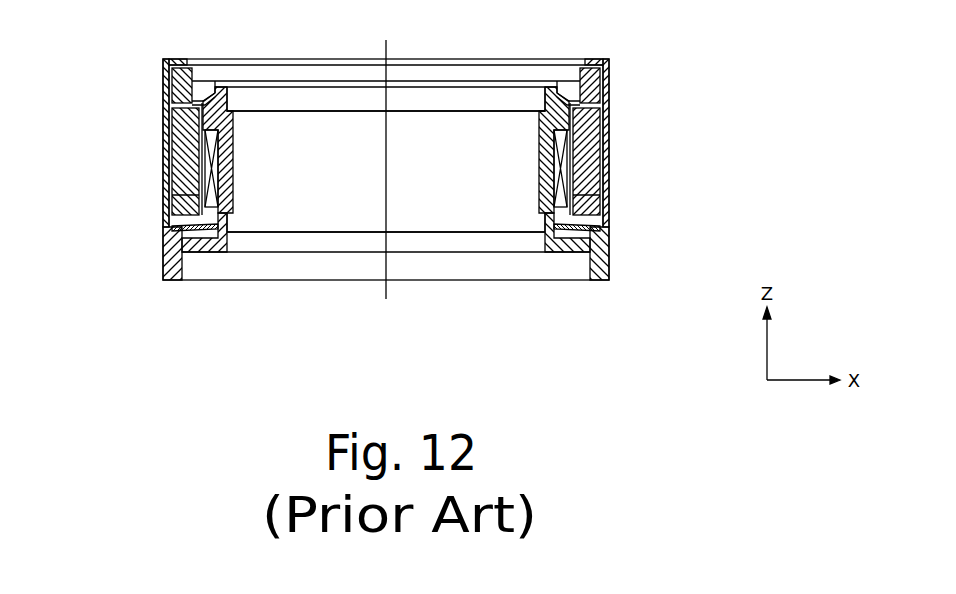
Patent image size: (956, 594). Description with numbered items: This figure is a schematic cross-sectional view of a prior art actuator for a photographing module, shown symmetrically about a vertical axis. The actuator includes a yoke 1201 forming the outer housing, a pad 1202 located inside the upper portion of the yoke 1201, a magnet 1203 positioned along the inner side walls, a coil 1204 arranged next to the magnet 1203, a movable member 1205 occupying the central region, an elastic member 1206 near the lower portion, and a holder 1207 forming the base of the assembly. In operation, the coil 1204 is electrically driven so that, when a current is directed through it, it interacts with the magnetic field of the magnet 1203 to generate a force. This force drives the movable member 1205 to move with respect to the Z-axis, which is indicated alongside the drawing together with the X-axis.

The yoke 1201 is at (168, 63).
The pad 1202 is at (168, 98).
The magnet 1203 is at (168, 162).
The coil 1204 is at (558, 175).
The movable member 1205 is at (557, 112).
The elastic member 1206 is at (168, 225).
The holder 1207 is at (168, 263).